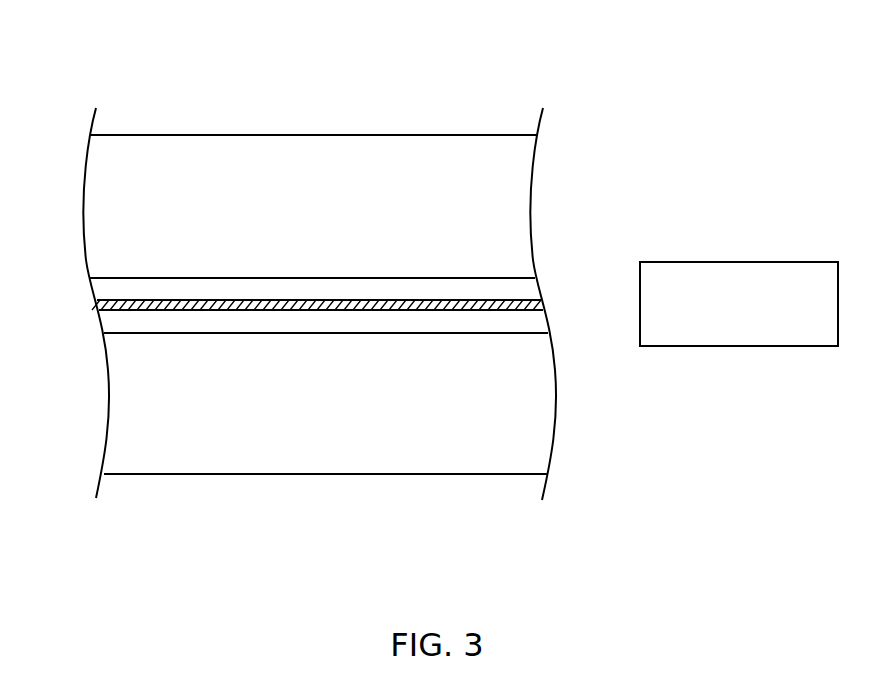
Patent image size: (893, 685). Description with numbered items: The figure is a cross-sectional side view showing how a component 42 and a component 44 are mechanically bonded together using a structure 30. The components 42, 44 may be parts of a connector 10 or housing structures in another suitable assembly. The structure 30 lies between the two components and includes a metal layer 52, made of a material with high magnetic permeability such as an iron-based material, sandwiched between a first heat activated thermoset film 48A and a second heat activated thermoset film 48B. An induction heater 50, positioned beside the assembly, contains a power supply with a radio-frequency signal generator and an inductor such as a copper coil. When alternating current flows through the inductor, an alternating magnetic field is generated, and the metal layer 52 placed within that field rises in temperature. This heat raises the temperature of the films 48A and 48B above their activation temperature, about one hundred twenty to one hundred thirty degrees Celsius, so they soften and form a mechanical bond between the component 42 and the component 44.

The connector 10 is at (447, 70).
The structure 30 is at (78, 280).
The component 42 is at (517, 193).
The component 44 is at (543, 413).
The first heat activated thermoset film 48A is at (188, 290).
The second heat activated thermoset film 48B is at (180, 322).
The induction heater 50 is at (812, 335).
The metal layer 52 is at (242, 306).